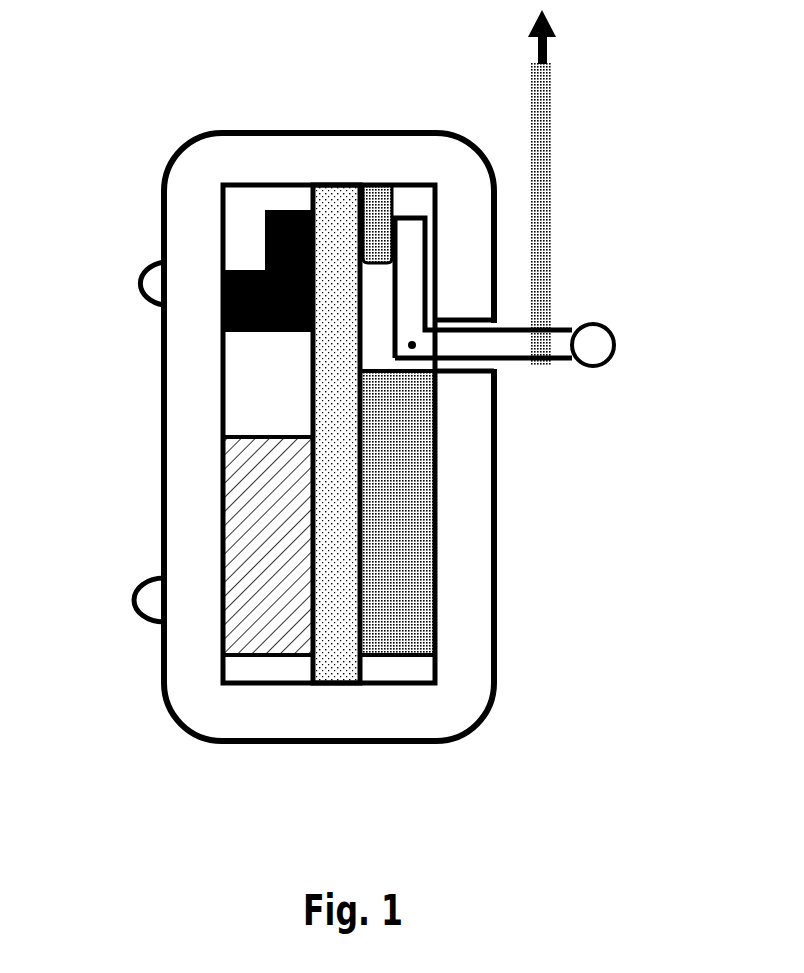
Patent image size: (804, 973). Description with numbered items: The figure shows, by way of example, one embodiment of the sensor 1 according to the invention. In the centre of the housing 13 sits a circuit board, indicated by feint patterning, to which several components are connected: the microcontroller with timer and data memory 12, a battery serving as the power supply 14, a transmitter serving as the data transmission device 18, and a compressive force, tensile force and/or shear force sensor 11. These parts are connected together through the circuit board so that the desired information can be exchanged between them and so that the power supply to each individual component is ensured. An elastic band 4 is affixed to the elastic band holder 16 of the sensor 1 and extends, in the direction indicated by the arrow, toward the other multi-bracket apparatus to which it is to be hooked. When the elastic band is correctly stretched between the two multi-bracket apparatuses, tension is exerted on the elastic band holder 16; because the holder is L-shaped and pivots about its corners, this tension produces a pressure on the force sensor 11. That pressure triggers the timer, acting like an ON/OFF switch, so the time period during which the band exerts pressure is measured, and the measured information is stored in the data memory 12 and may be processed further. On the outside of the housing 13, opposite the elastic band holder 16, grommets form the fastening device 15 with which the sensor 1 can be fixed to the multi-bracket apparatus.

The sensor 1 is at (392, 759).
The elastic band 4 is at (543, 128).
The compressive force, tensile force and/or shear force sensor 11 is at (378, 213).
The microcontroller with timer and data memory 12 is at (247, 622).
The housing 13 is at (472, 682).
The power supply 14 is at (398, 538).
The fastening device 15 is at (134, 593).
The elastic band holder 16 is at (595, 347).
The data transmission device 18 is at (278, 210).